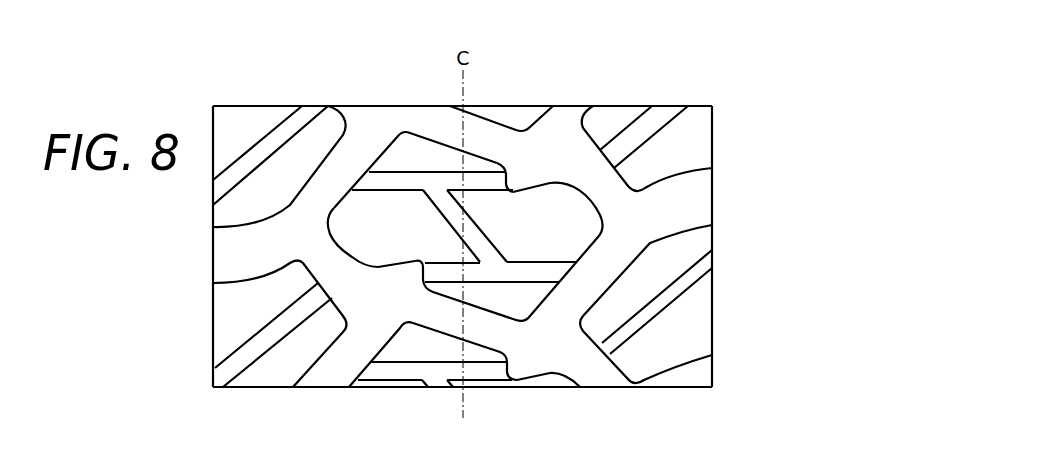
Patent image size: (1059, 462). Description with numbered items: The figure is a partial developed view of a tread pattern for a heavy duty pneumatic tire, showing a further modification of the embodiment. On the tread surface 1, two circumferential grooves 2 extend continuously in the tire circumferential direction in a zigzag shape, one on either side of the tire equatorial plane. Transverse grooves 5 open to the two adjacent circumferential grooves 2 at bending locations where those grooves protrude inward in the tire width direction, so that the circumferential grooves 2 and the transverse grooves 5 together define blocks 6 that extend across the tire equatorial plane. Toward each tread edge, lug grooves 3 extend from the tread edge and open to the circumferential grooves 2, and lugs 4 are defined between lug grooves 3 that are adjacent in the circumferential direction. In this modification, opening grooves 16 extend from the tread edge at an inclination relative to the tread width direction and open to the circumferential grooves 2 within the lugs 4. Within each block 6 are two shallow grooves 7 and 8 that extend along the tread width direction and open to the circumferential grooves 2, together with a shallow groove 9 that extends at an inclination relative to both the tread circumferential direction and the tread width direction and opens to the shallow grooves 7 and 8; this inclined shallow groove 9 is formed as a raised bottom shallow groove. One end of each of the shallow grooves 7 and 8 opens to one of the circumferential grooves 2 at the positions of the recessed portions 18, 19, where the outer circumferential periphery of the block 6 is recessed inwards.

The tread surface 1 is at (604, 79).
The circumferential grooves 2 is at (340, 370).
The lug grooves 3 is at (216, 255).
The lugs 4 is at (228, 136).
The transverse grooves 5 is at (478, 139).
The blocks 6 is at (527, 228).
The shallow groove 7 is at (532, 261).
The shallow groove 8 is at (393, 183).
The shallow groove 9 is at (450, 213).
The opening grooves 16 is at (216, 182).
The recessed portion 18 is at (513, 184).
The recessed portion 19 is at (417, 270).